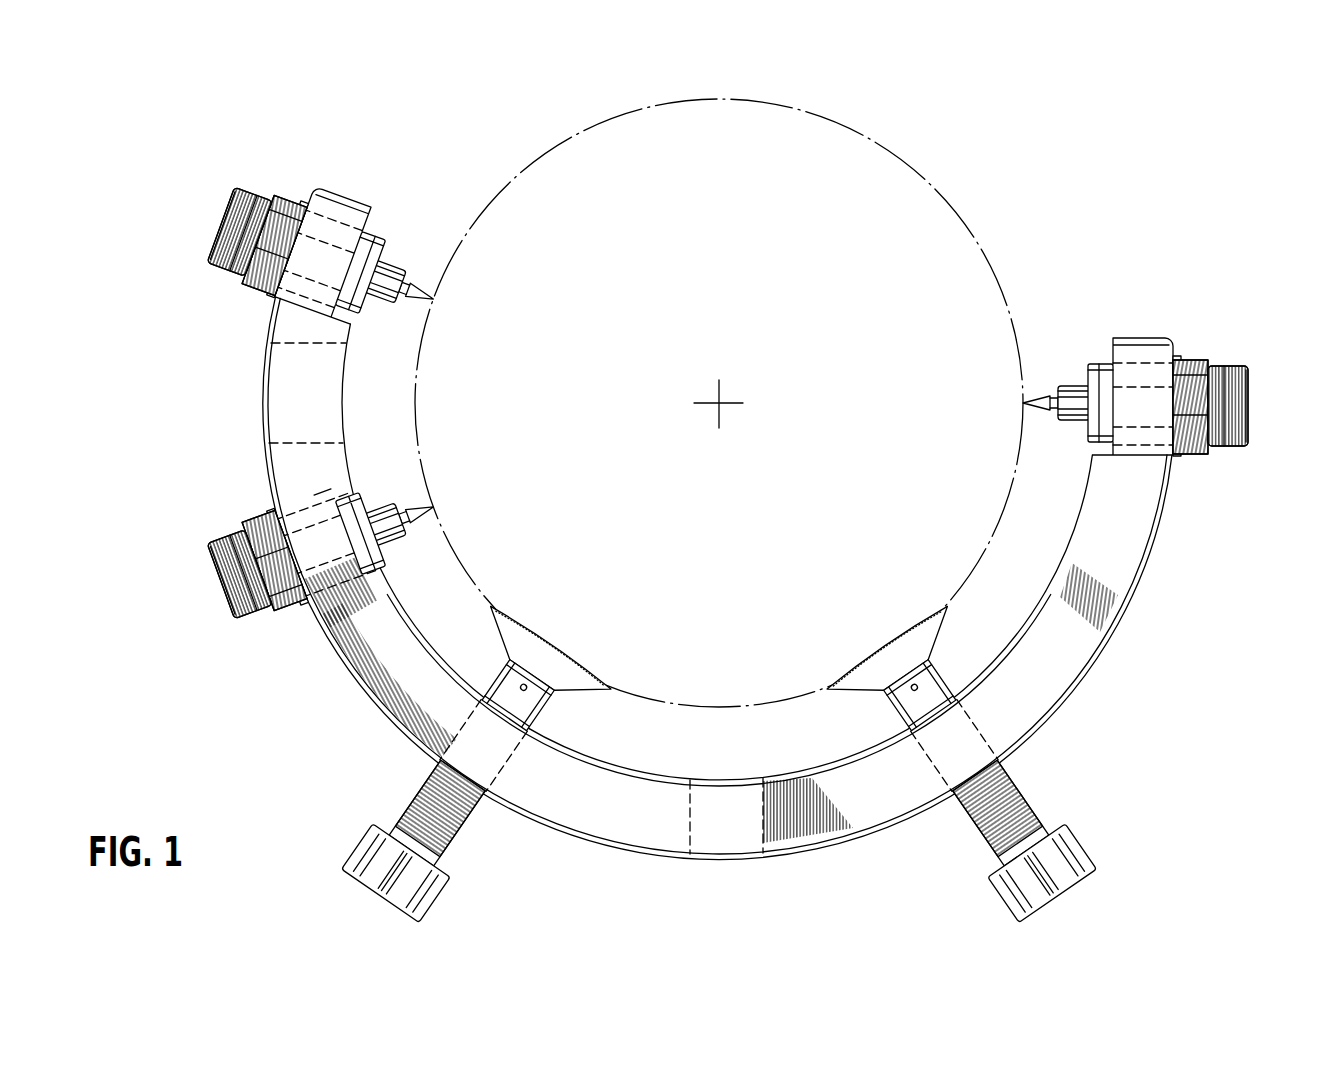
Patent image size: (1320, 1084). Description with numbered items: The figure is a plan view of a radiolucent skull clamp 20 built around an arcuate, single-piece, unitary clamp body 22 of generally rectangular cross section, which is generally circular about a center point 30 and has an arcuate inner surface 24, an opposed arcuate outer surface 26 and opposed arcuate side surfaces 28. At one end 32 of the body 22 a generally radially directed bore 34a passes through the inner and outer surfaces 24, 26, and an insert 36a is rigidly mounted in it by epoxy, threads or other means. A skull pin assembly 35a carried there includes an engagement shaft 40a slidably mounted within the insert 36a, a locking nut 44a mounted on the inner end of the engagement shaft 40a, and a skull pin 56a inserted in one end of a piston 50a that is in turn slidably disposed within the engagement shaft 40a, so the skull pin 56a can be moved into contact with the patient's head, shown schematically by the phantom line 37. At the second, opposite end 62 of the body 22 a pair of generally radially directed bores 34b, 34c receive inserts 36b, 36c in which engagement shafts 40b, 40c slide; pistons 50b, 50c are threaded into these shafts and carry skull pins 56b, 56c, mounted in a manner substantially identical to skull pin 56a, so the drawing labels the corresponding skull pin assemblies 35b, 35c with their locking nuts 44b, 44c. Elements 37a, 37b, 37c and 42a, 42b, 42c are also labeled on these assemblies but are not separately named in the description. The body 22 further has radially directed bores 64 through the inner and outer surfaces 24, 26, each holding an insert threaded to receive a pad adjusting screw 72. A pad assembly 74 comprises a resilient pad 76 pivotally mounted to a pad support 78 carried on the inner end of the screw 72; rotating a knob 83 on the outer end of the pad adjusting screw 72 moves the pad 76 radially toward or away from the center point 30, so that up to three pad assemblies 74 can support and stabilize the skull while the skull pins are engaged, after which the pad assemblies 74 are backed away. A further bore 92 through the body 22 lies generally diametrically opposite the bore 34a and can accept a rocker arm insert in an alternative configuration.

The skull clamp 20 is at (711, 504).
The clamp body 22 is at (1049, 724).
The inner surface 24 is at (1028, 621).
The outer surface 26 is at (1100, 662).
The side surfaces 28 is at (702, 578).
The center point 30 is at (722, 401).
The first end 32 is at (1090, 472).
The bore 34a is at (1140, 445).
The bore 34b is at (322, 237).
The bore 34c is at (305, 566).
The skull pin assembly 35a is at (1167, 387).
The clamp assembly 35b is at (310, 212).
The clamp assembly 35c is at (306, 561).
The insert 36a is at (1193, 357).
The insert 36b is at (286, 191).
The insert 36c is at (265, 514).
The phantom line 37 is at (936, 174).
The thread end 37a is at (1183, 457).
The thread end 37b is at (302, 190).
The thread end 37c is at (290, 610).
The engagement shaft 40a is at (1260, 383).
The engagement shaft 40b is at (222, 223).
The engagement shaft 40c is at (216, 557).
The nut divider ring 42a is at (1243, 360).
The nut divider ring 42b is at (224, 262).
The nut divider ring 42c is at (245, 528).
The locking nut 44a is at (1103, 363).
The collar 44b is at (377, 228).
The collar 44c is at (357, 496).
The piston 50a is at (1253, 412).
The piston 50b is at (225, 230).
The piston 50c is at (225, 592).
The skull pin 56a is at (1046, 392).
The skull pin 56b is at (413, 278).
The skull pin 56c is at (401, 548).
The second end 62 is at (270, 373).
The bores 64 is at (688, 835).
The pad adjusting screw 72 is at (715, 841).
The pad assembly 74 is at (719, 654).
The resilient pad 76 is at (513, 610).
The pad support 78 is at (547, 712).
The knob 83 is at (350, 848).
The bore 92 is at (332, 347).